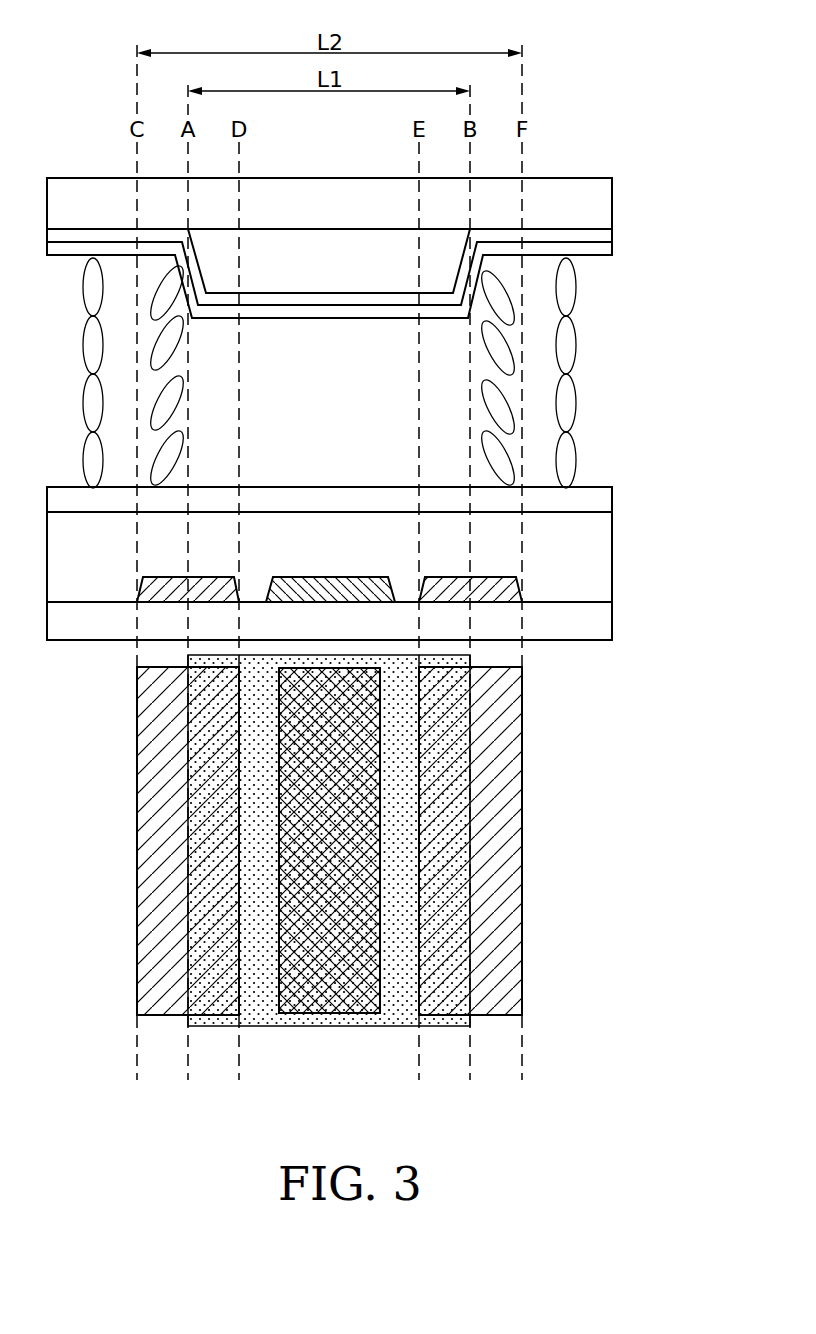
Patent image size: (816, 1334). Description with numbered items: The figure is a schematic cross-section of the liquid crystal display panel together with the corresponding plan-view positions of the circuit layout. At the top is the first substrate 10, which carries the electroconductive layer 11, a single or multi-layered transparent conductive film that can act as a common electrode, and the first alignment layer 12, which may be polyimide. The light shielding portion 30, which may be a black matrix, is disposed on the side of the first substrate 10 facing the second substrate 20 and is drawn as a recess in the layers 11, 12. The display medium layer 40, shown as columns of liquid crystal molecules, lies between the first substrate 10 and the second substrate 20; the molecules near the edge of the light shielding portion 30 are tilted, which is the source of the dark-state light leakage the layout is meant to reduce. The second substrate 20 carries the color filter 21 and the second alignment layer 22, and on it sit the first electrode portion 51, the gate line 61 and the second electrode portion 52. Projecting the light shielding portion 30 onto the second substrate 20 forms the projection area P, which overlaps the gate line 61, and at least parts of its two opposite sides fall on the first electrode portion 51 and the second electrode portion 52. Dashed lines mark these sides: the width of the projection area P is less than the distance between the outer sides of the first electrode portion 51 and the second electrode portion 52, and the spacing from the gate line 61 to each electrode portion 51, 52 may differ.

The first substrate 10 is at (593, 208).
The electroconductive layer 11 is at (612, 231).
The first alignment layer 12 is at (608, 250).
The second substrate 20 is at (595, 622).
The color filter 21 is at (595, 537).
The second alignment layer 22 is at (595, 500).
The light shielding portion 30 is at (315, 252).
The display medium layer 40 is at (590, 391).
The first electrode portion 51 is at (178, 588).
The second electrode portion 52 is at (500, 578).
The gate line 61 is at (323, 587).
The projection area P is at (358, 1026).